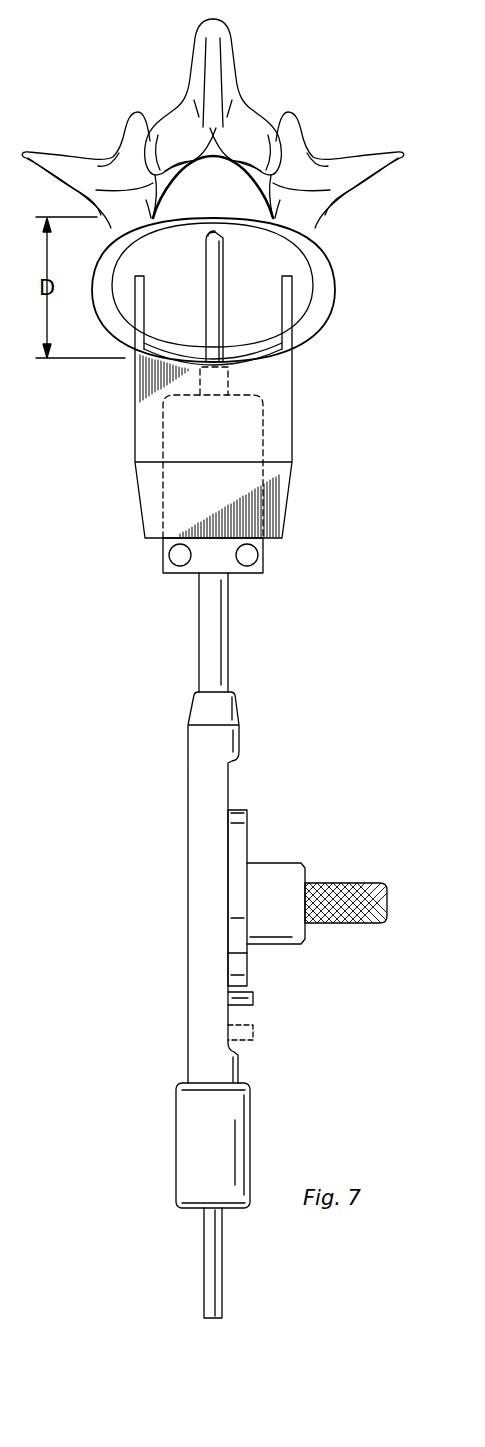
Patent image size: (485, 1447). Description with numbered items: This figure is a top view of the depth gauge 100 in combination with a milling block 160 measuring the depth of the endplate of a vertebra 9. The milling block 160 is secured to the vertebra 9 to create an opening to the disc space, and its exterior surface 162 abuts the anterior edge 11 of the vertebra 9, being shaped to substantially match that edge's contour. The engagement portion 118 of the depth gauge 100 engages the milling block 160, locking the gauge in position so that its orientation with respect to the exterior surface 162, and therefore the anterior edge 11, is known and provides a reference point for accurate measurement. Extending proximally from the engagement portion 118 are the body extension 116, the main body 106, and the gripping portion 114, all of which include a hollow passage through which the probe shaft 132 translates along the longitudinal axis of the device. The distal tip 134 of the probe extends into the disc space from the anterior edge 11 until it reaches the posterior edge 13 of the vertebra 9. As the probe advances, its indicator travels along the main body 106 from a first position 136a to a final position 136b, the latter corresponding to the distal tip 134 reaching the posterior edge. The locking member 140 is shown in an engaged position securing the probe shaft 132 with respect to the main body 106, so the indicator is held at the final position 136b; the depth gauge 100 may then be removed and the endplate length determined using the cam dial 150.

The inferior vertebra 9 is at (234, 318).
The anterior edge 11 is at (247, 365).
The posterior edge 13 is at (198, 218).
The depth gauge 100 is at (125, 838).
The main body 106 is at (253, 887).
The gripping portion 114 is at (176, 1145).
The body extension 116 is at (199, 632).
The engagement portion 118 is at (163, 555).
The probe shaft 132 is at (206, 288).
The distal tip 134 is at (223, 232).
The first position 136a is at (253, 998).
The final position 136b is at (253, 1033).
The locking member 140 is at (367, 925).
The cam dial 150 is at (248, 842).
The milling block 160 is at (221, 407).
The exterior surface 162 is at (292, 363).